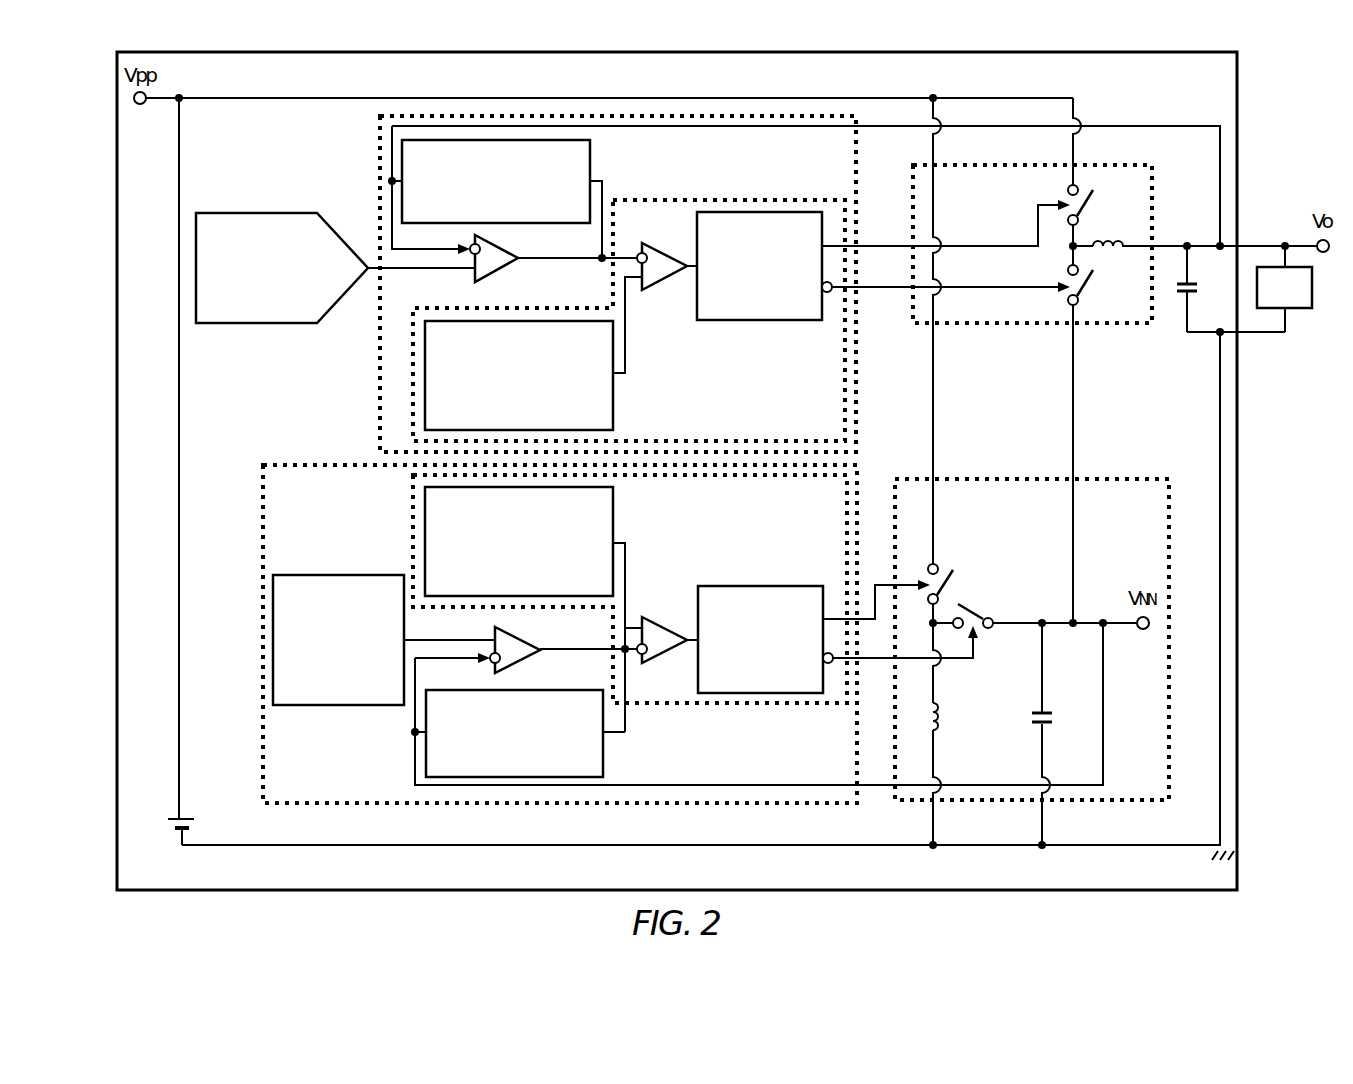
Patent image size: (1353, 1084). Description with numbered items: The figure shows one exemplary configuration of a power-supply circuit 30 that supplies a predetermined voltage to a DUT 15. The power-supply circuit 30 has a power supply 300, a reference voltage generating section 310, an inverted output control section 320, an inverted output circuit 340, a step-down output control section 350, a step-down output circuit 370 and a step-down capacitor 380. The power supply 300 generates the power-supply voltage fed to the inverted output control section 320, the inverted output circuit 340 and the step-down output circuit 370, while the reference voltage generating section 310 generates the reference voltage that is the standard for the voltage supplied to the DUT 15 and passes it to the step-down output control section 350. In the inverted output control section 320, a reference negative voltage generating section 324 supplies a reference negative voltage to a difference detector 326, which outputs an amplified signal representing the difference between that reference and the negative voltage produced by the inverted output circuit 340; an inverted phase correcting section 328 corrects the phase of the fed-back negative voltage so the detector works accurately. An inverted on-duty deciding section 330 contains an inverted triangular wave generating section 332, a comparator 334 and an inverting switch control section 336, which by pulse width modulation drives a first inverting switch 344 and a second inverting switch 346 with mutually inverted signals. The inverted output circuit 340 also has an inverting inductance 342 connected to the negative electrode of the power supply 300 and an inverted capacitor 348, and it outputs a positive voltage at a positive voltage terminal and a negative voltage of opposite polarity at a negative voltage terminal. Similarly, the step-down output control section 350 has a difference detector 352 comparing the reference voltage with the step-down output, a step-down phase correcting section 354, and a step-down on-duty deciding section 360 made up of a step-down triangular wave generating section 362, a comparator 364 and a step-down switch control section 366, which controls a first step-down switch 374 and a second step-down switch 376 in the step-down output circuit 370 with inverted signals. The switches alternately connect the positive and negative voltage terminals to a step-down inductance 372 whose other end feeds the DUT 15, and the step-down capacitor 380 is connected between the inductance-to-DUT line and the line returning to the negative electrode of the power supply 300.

The power-supply circuit 30 is at (1237, 92).
The DUT 15 is at (1300, 308).
The power supply 300 is at (196, 822).
The reference voltage generating section 310 is at (253, 213).
The inverted output control section 320 is at (556, 803).
The reference negative voltage generating section 324 is at (340, 575).
The difference detector 326 is at (523, 621).
The inverted phase correcting section 328 is at (603, 760).
The inverted on-duty deciding section 330 is at (733, 703).
The inverted triangular wave generating section 332 is at (613, 520).
The comparator 334 is at (668, 637).
The inverting switch control section 336 is at (762, 586).
The inverted output circuit 340 is at (1113, 479).
The inverting inductance 342 is at (942, 718).
The first inverting switch 344 is at (962, 604).
The second inverting switch 346 is at (948, 575).
The inverted capacitor 348 is at (1045, 712).
The step-down output control section 350 is at (380, 390).
The difference detector 352 is at (498, 282).
The step-down phase correcting section 354 is at (590, 170).
The step-down on-duty deciding section 360 is at (727, 200).
The step-down triangular wave generating section 362 is at (613, 404).
The comparator 364 is at (668, 282).
The step-down switch control section 366 is at (752, 320).
The step-down output circuit 370 is at (1113, 323).
The step-down inductance 372 is at (1105, 238).
The first step-down switch 374 is at (1090, 286).
The second step-down switch 376 is at (1093, 205).
The step-down capacitor 380 is at (1180, 294).